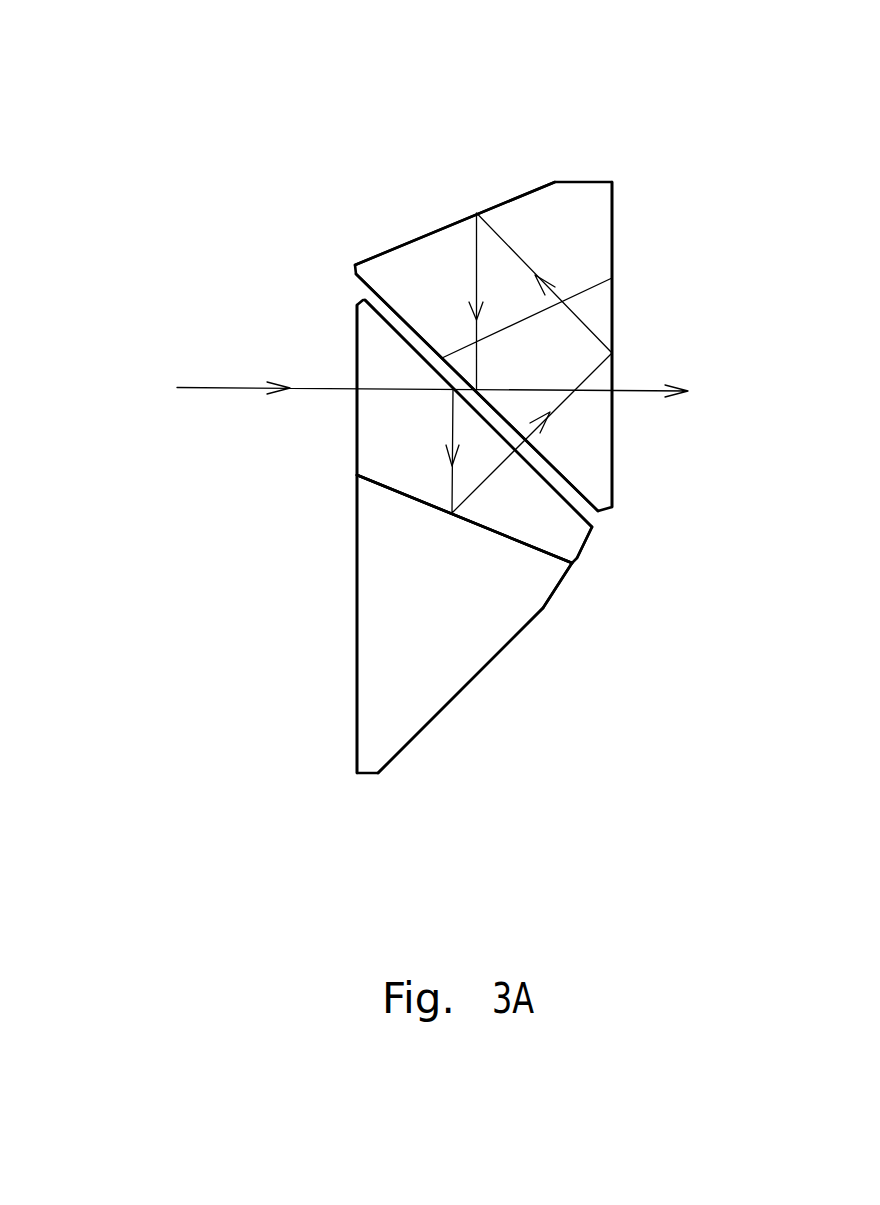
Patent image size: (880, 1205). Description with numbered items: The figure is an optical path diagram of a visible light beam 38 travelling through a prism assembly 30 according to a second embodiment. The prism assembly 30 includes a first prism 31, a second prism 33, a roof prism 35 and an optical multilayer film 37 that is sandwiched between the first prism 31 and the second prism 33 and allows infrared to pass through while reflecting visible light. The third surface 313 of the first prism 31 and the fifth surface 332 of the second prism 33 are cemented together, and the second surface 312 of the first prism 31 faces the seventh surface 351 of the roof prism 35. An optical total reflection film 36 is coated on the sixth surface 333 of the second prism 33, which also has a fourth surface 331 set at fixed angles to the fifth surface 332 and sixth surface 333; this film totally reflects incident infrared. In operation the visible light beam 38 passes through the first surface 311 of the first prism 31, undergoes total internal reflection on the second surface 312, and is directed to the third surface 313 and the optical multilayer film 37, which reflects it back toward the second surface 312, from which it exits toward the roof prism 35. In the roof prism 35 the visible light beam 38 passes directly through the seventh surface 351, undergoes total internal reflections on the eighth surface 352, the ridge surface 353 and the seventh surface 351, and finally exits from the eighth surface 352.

The prism assembly 30 is at (188, 34).
The first prism 31 is at (355, 357).
The first surface 311 is at (355, 358).
The second surface 312 is at (367, 343).
The third surface 313 is at (381, 480).
The second prism 33 is at (455, 635).
The fourth surface 331 is at (355, 690).
The fifth surface 332 is at (402, 493).
The sixth surface 333 is at (437, 707).
The roof prism 35 is at (413, 273).
The seventh surface 351 is at (563, 478).
The eighth surface 352 is at (612, 262).
The ridge surface 353 is at (497, 207).
The optical total reflection film 36 is at (543, 608).
The optical multilayer film 37 is at (513, 540).
The visible light beam 38 is at (233, 388).